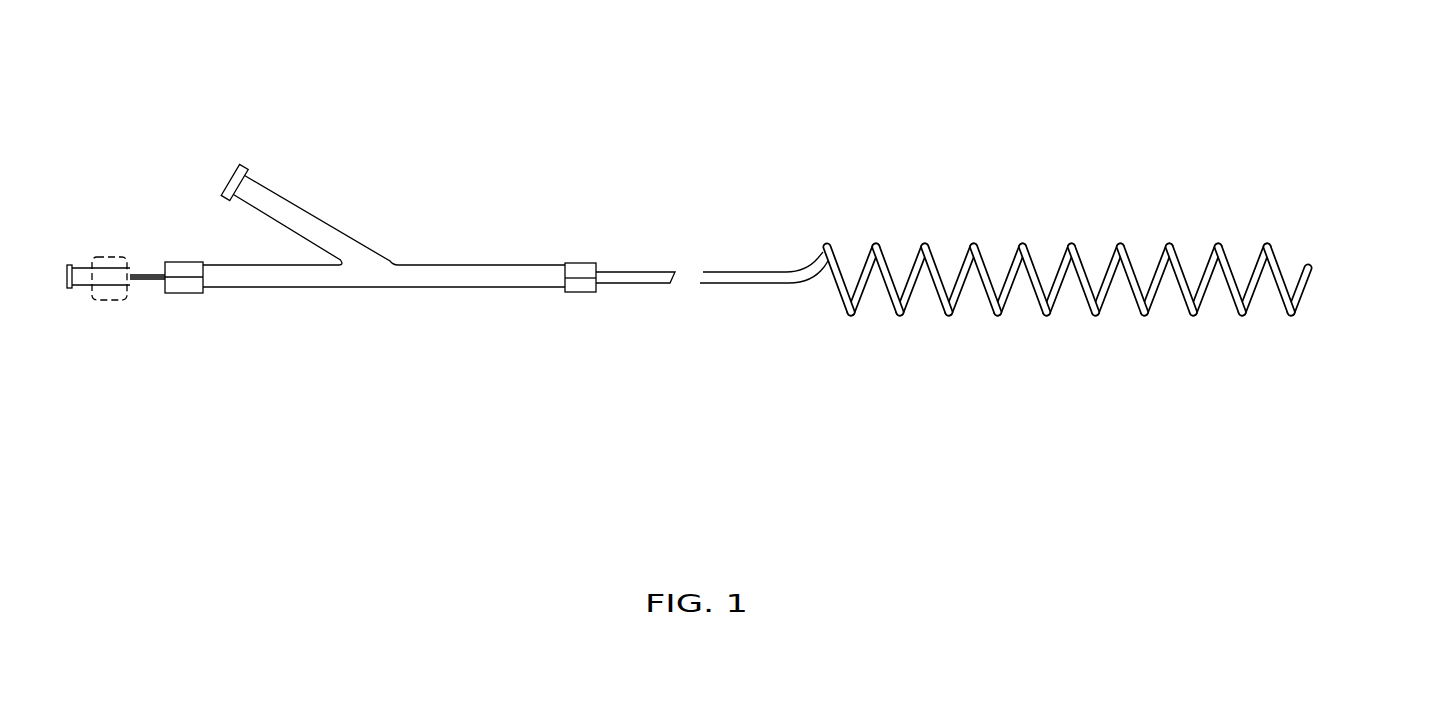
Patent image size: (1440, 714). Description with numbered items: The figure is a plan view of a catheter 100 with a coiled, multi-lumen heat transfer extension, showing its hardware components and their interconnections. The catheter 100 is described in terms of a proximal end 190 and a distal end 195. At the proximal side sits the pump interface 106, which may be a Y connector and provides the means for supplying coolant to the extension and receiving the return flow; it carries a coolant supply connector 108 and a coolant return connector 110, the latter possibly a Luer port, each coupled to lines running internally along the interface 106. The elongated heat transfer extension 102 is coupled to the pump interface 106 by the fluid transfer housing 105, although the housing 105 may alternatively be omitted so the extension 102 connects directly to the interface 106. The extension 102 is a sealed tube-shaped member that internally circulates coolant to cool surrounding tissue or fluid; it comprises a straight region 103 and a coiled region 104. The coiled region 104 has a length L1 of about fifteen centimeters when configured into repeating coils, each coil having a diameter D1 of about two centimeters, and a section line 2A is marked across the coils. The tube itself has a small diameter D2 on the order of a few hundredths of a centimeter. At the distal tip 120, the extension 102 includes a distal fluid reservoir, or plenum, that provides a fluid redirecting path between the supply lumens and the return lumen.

The catheter 100 is at (280, 462).
The heat transfer extension 102 is at (1316, 260).
The straight region 103 is at (718, 294).
The coiled region 104 is at (851, 318).
The fluid transfer housing 105 is at (582, 262).
The pump interface 106 is at (562, 333).
The coolant supply connector 108 is at (283, 198).
The coolant return connector 110 is at (87, 262).
The distal tip 120 is at (1331, 253).
The proximal end 190 is at (250, 126).
The distal end 195 is at (1162, 96).
The section line 2A- 2A is at (918, 281).
The coil diameter D1 is at (1118, 390).
The tube diameter D2 is at (754, 348).
The coiled region length L1 is at (1200, 468).